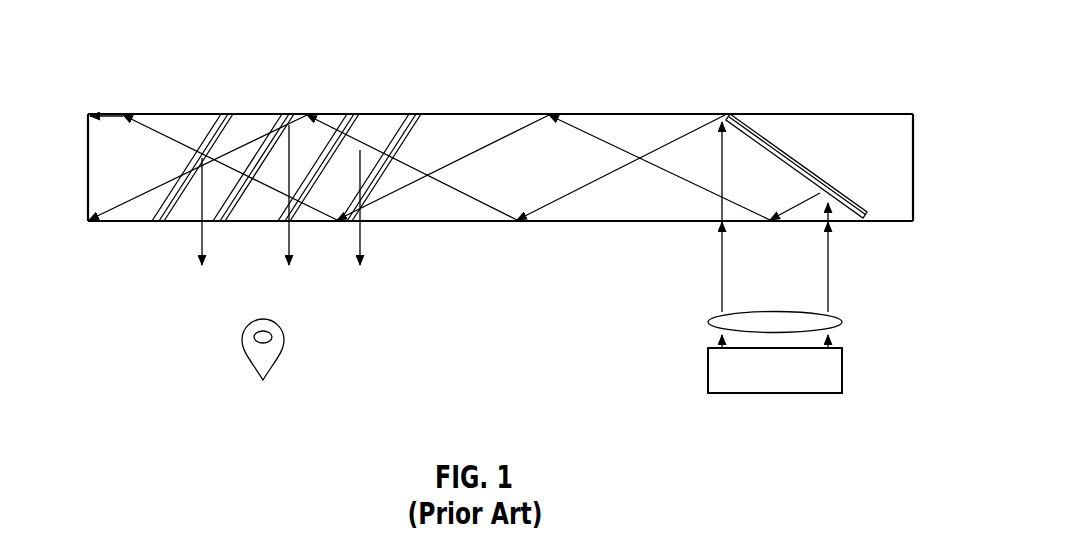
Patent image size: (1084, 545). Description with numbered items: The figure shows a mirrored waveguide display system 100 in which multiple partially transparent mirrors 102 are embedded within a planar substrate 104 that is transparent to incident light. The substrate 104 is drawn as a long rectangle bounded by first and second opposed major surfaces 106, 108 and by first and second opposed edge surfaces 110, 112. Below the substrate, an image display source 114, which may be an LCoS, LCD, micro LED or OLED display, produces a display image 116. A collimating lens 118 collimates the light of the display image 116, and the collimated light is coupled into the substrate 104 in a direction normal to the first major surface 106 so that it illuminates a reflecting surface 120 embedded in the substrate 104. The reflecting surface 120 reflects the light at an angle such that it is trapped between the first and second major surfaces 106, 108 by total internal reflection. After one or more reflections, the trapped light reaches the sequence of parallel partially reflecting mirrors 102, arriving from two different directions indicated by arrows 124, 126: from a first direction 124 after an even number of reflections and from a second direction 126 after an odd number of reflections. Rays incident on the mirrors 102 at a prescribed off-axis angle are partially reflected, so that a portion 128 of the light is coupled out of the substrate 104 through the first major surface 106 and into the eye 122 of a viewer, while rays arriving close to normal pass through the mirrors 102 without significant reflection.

The mirrored waveguide display system 100 is at (803, 43).
The partially transparent mirrors 102 is at (278, 127).
The planar substrate 104 is at (480, 125).
The first major surface 106 is at (407, 222).
The second major surface 108 is at (582, 113).
The first edge surface 110 is at (87, 165).
The second edge surface 112 is at (915, 167).
The image display source 114 is at (775, 395).
The display image 116 is at (722, 312).
The collimating lens 118 is at (836, 317).
The reflecting surface 120 is at (797, 163).
The eye 122 is at (252, 360).
The first direction 124 is at (215, 166).
The second direction 126 is at (168, 178).
The portion of reflected light coupled out 128 is at (198, 244).